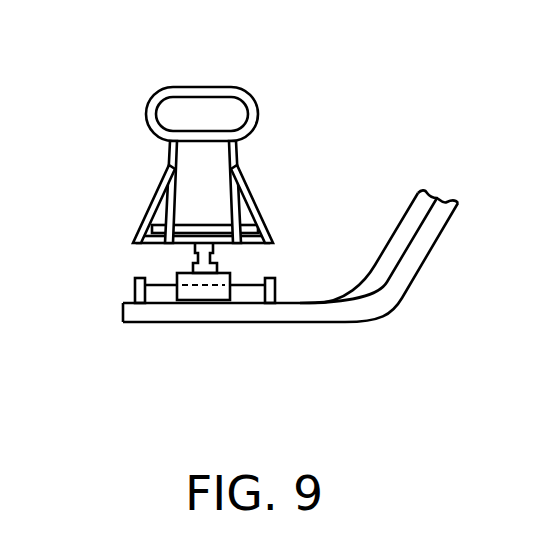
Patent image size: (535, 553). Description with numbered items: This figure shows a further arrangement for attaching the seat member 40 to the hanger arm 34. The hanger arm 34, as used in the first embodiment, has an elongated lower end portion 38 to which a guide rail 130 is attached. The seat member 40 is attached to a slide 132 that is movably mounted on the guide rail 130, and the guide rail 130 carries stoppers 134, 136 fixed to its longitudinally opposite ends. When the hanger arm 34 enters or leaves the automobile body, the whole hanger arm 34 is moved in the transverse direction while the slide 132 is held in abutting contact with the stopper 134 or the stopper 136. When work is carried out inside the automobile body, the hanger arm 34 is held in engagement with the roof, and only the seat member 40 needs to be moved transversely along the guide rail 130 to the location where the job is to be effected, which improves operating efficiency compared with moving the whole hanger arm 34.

The hanger arm 34 is at (398, 283).
The elongated lower end portion 38 is at (185, 318).
The seat member 40 is at (97, 104).
The guide rail 130 is at (248, 298).
The slide 132 is at (208, 299).
The stopper 134 is at (136, 293).
The stopper 136 is at (276, 290).